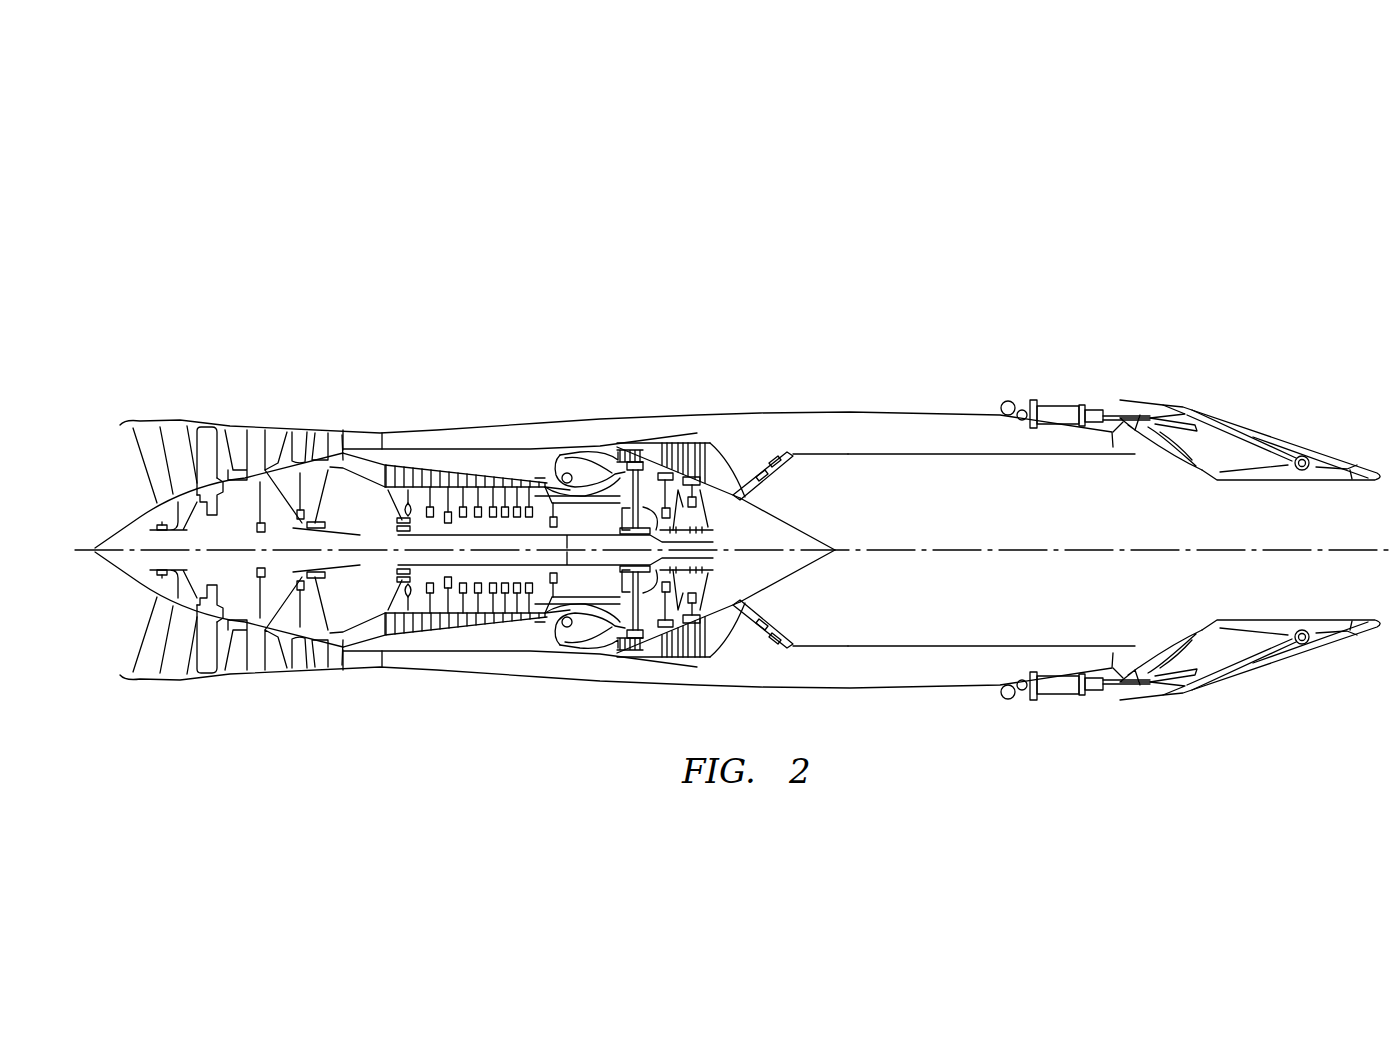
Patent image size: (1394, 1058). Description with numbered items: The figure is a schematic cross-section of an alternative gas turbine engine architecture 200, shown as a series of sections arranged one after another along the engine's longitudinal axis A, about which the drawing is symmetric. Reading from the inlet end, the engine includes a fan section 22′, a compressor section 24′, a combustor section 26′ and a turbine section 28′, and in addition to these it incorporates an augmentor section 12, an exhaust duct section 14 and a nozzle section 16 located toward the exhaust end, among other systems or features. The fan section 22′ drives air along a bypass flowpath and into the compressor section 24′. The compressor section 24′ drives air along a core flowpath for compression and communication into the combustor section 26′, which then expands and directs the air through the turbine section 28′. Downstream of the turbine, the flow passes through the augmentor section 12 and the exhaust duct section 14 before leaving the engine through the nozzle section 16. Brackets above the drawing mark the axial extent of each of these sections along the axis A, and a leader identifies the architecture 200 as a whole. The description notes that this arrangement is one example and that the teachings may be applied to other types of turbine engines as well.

The alternative engine architecture 200 is at (1027, 234).
The fan section 22′ is at (120, 352).
The compressor section 24′ is at (338, 352).
The combustor section 26′ is at (560, 352).
The turbine section 28′ is at (632, 352).
The augmentor section 12 is at (848, 352).
The exhaust duct section 14 is at (1127, 352).
The nozzle section 16 is at (1378, 352).
The engine central longitudinal axis A is at (1370, 553).